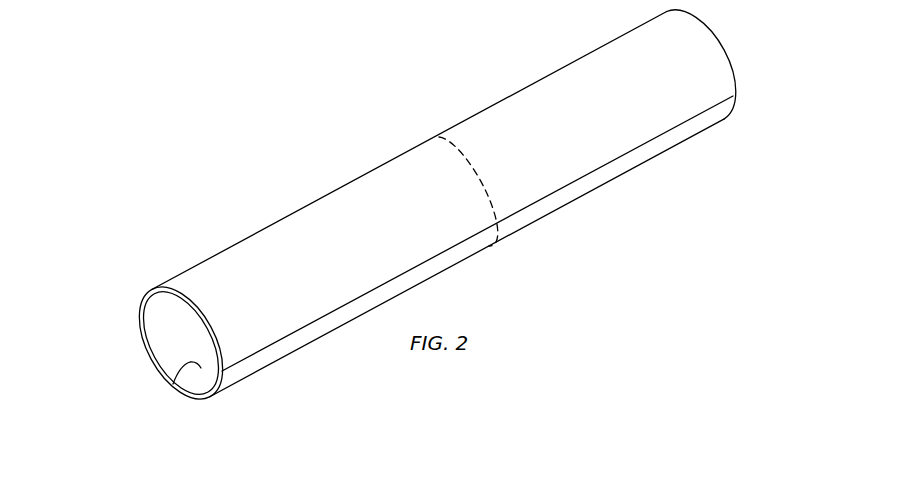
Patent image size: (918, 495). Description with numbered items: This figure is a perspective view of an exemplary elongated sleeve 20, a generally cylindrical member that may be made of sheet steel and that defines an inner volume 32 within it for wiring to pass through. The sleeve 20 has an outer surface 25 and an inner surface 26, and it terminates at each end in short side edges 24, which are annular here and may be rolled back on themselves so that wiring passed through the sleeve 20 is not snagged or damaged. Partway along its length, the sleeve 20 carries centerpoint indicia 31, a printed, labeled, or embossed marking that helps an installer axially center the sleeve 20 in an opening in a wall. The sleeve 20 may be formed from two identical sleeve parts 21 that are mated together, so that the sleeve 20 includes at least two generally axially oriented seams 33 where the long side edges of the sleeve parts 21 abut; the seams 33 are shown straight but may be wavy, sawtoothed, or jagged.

The sleeve 20 is at (290, 145).
The sleeve part 21 is at (725, 83).
The short side edge 24 is at (150, 357).
The outer surface 25 is at (580, 78).
The inner surface 26 is at (182, 366).
The centerpoint indicia 31 is at (458, 146).
The inner volume 32 is at (202, 348).
The seam 33 is at (580, 177).